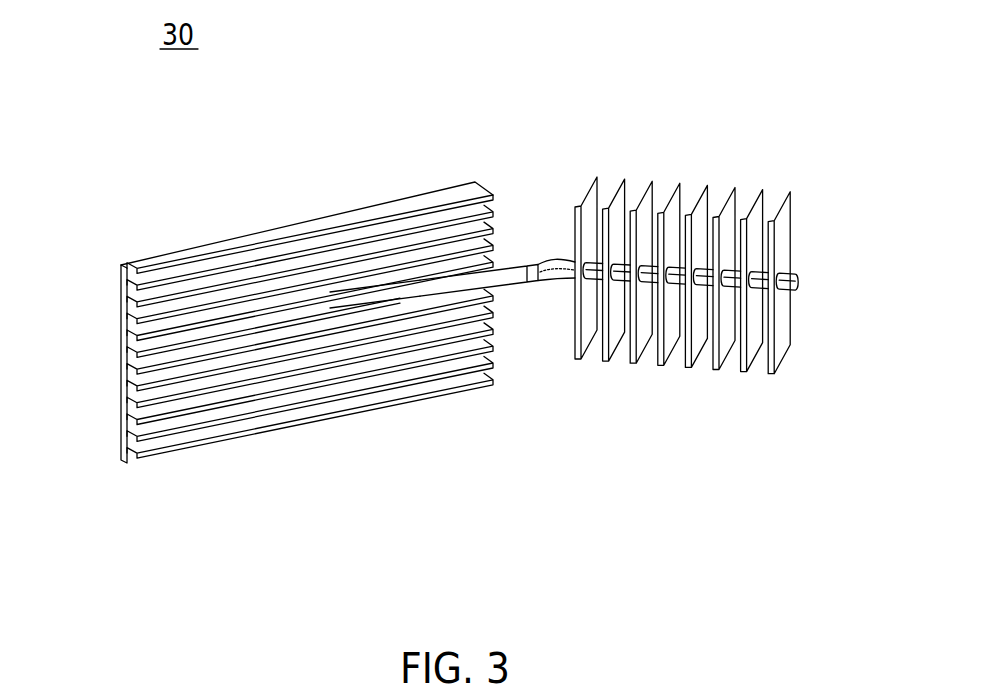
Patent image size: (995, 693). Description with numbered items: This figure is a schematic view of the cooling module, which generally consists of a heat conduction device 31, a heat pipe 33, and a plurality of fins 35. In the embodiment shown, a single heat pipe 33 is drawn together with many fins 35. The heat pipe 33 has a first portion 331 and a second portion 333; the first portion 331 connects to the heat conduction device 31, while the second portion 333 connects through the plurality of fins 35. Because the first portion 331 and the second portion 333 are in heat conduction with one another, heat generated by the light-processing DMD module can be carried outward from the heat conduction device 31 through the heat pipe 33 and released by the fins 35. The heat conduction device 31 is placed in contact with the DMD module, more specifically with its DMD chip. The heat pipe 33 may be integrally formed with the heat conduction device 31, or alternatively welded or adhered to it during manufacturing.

The heat conduction device 31 is at (210, 244).
The heat pipe 33 is at (534, 283).
The first portion 331 is at (147, 368).
The second portion 333 is at (798, 289).
The fin 35 is at (690, 170).